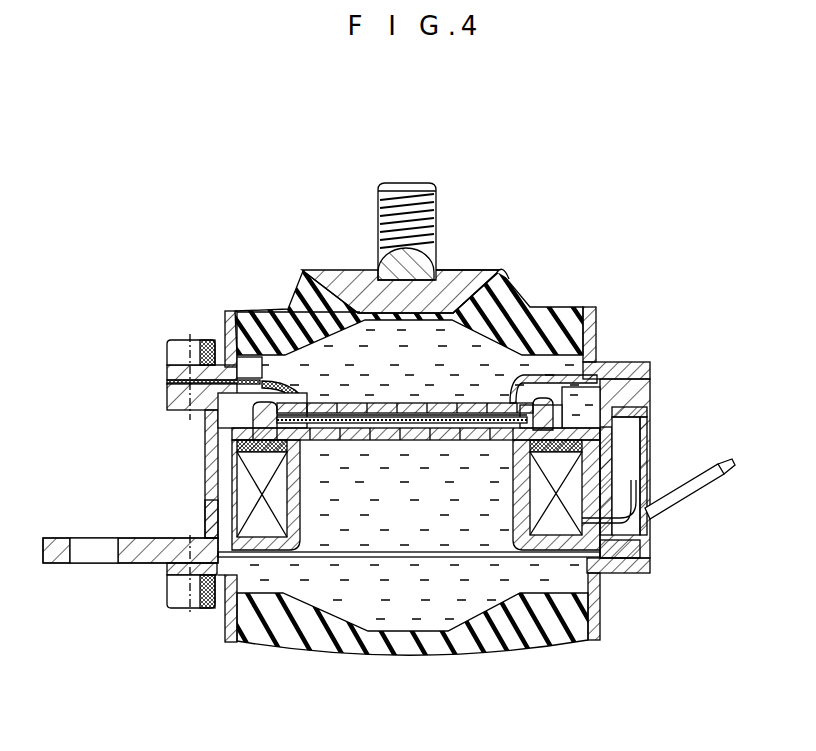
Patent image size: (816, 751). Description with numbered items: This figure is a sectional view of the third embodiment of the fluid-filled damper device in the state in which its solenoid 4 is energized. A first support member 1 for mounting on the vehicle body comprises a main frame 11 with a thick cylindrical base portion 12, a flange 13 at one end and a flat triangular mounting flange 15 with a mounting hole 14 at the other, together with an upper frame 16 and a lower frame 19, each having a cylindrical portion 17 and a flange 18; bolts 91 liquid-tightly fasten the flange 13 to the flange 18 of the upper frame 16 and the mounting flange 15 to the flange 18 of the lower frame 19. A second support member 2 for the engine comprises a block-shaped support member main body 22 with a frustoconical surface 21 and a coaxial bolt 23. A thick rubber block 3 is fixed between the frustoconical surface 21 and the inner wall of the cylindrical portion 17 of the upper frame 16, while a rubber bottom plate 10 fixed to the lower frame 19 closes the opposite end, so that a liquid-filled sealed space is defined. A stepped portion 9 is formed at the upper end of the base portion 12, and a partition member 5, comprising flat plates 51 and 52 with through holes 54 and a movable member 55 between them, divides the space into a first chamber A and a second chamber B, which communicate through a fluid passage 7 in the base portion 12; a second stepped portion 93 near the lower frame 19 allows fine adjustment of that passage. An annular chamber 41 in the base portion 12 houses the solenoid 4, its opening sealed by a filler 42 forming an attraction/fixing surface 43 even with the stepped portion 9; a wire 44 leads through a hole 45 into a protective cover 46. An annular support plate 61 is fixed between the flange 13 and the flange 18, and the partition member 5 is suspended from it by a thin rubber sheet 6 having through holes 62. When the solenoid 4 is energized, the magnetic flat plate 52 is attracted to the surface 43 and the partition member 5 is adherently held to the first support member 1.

The first support member 1 is at (204, 428).
The second support member 2 is at (351, 266).
The rubber block 3 is at (288, 301).
The solenoid 4 is at (251, 489).
The partition member 5 is at (467, 445).
The rubber sheet 6 is at (308, 394).
The fluid passage 7 is at (224, 464).
The stepped portion 9 is at (297, 438).
The rubber bottom plate 10 is at (400, 652).
The main frame 11 is at (204, 515).
The cylindrical base portion 12 is at (603, 445).
The flange 13 is at (640, 393).
The mounting hole 14 is at (95, 556).
The mounting flange 15 is at (145, 564).
The upper frame 16 is at (226, 311).
The cylindrical portion 17 is at (592, 327).
The flange 18 is at (628, 371).
The lower frame 19 is at (232, 652).
The frustoconical surface 21 is at (508, 283).
The support member main body 22 is at (452, 280).
The bolt 23 is at (413, 180).
The annular chamber 41 is at (547, 512).
The filler 42 is at (603, 460).
The attraction/fixing surface 43 is at (520, 476).
The wire 44 is at (698, 498).
The hole 45 is at (632, 557).
The protective cover 46 is at (647, 430).
The flat plate 51 is at (400, 404).
The flat plate 52 is at (418, 438).
The through holes 54 is at (455, 408).
The movable member 55 is at (397, 438).
The annular support plate 61 is at (178, 378).
The through holes 62 is at (272, 370).
The bolts 91 is at (198, 349).
The second stepped portion 93 is at (270, 557).
The first chamber A is at (417, 382).
The second chamber B is at (404, 534).